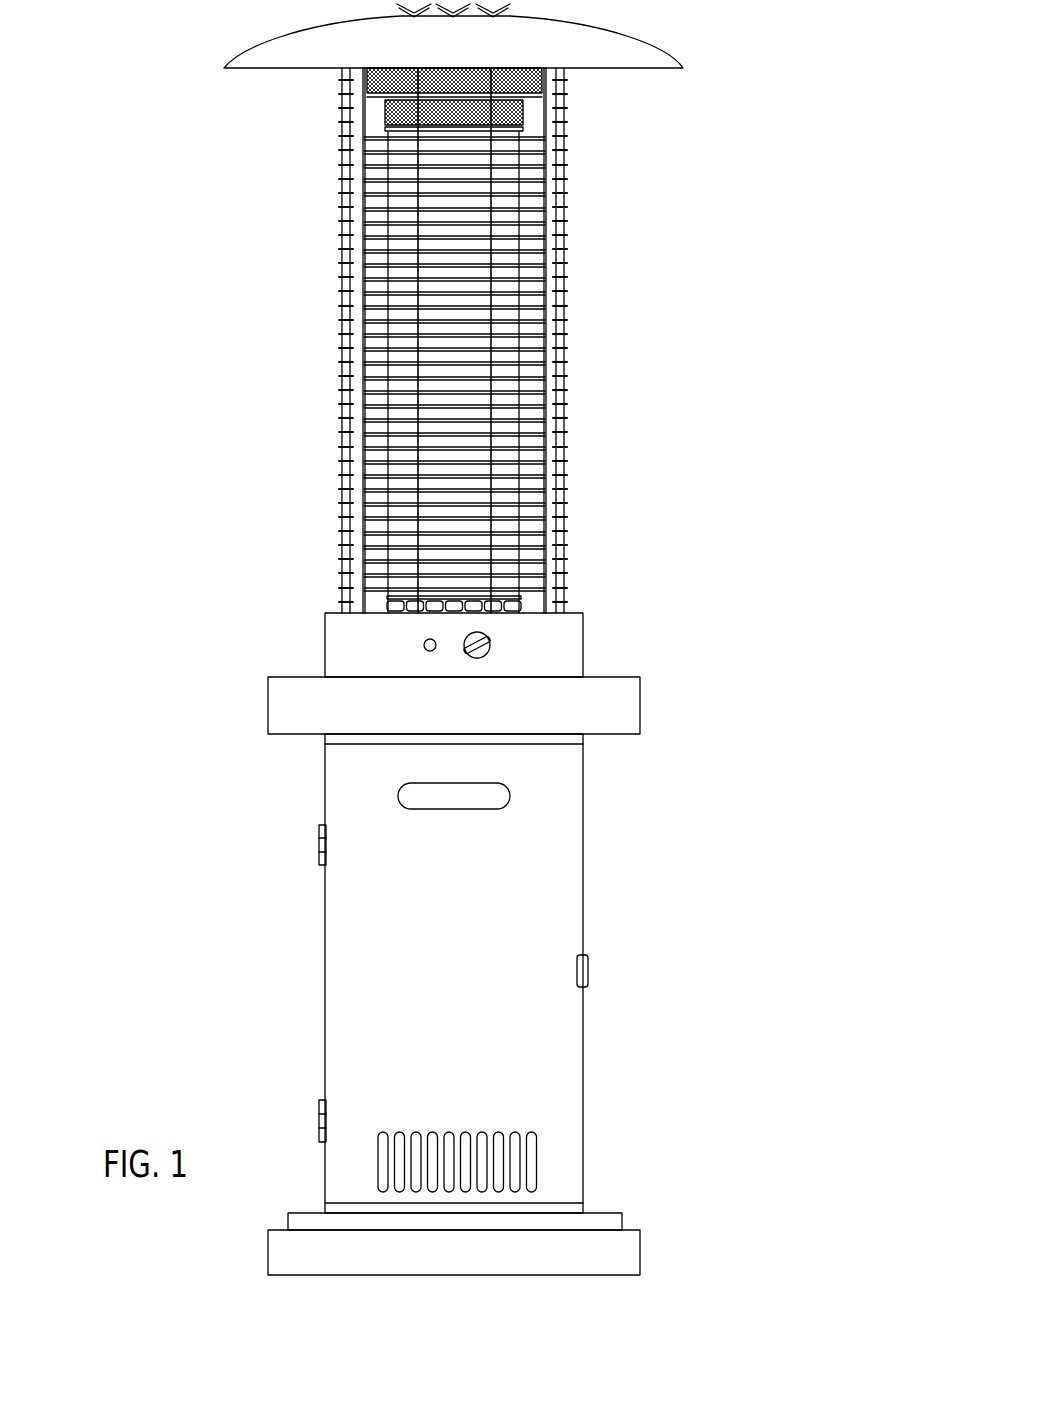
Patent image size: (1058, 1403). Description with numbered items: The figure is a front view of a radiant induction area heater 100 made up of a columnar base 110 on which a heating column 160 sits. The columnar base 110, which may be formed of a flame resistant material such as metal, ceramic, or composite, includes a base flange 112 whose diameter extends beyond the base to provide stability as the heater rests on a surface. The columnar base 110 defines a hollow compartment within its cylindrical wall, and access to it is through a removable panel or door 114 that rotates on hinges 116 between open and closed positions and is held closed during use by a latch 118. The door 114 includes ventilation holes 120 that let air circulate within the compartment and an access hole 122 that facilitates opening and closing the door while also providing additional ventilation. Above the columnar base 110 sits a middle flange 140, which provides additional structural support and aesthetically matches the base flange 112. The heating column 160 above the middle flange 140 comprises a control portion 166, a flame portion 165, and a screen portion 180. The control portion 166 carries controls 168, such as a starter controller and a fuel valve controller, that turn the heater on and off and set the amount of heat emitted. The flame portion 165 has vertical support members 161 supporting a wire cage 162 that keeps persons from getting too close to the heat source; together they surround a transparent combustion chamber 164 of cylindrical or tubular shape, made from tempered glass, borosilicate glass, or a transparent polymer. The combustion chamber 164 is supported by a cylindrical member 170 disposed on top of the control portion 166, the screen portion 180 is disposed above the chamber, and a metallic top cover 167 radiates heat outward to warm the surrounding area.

The radiant induction area heater 100 is at (203, 595).
The columnar base 110 is at (605, 866).
The base flange 112 is at (641, 1252).
The door 114 is at (340, 969).
The hinges 116 is at (318, 848).
The latch 118 is at (582, 973).
The ventilation holes 120 is at (520, 1161).
The access hole 122 is at (500, 795).
The middle flange 140 is at (268, 705).
The heating column 160 is at (584, 291).
The vertical support members 161 is at (357, 285).
The wire cage 162 is at (566, 390).
The transparent combustion chamber 164 is at (512, 213).
The flame portion 165 is at (341, 353).
The control portion 166 is at (570, 666).
The top cover 167 is at (612, 39).
The controls 168 is at (424, 645).
The cylindrical member 170 is at (512, 595).
The screen portion 180 is at (556, 84).